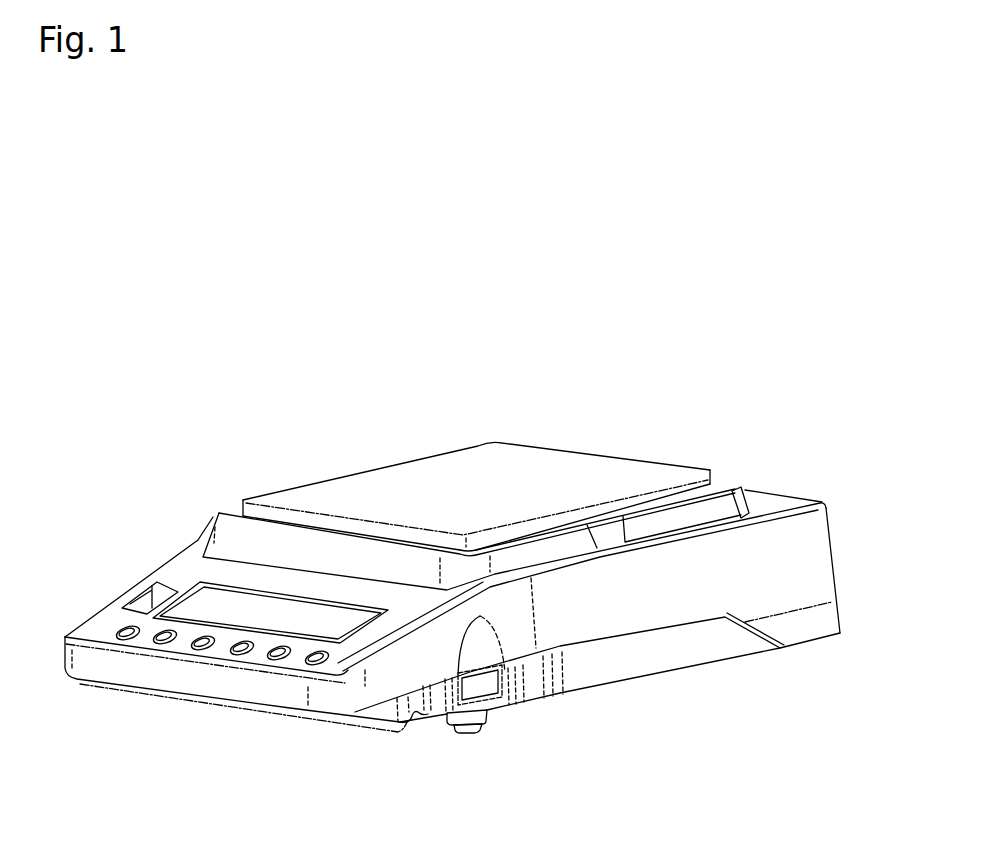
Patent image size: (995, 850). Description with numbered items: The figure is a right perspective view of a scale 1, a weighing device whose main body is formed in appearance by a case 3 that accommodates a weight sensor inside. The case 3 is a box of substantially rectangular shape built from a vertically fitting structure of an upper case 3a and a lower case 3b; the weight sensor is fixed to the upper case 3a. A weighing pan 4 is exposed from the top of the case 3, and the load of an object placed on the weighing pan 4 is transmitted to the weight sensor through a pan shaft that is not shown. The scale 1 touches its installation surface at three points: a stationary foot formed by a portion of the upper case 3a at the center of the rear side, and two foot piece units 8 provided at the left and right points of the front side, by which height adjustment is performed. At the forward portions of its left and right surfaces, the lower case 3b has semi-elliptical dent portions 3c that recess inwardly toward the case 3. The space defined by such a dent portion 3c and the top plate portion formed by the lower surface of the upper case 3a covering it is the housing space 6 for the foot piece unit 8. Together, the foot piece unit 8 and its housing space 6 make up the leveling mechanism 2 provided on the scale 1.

The scale 1 is at (277, 405).
The leveling mechanism 2 is at (513, 711).
The case 3 is at (778, 495).
The upper case 3a is at (832, 545).
The lower case 3b is at (670, 672).
The dent portion 3c is at (417, 709).
The weighing pan 4 is at (540, 467).
The housing space 6 is at (533, 687).
The foot piece unit 8 is at (502, 707).